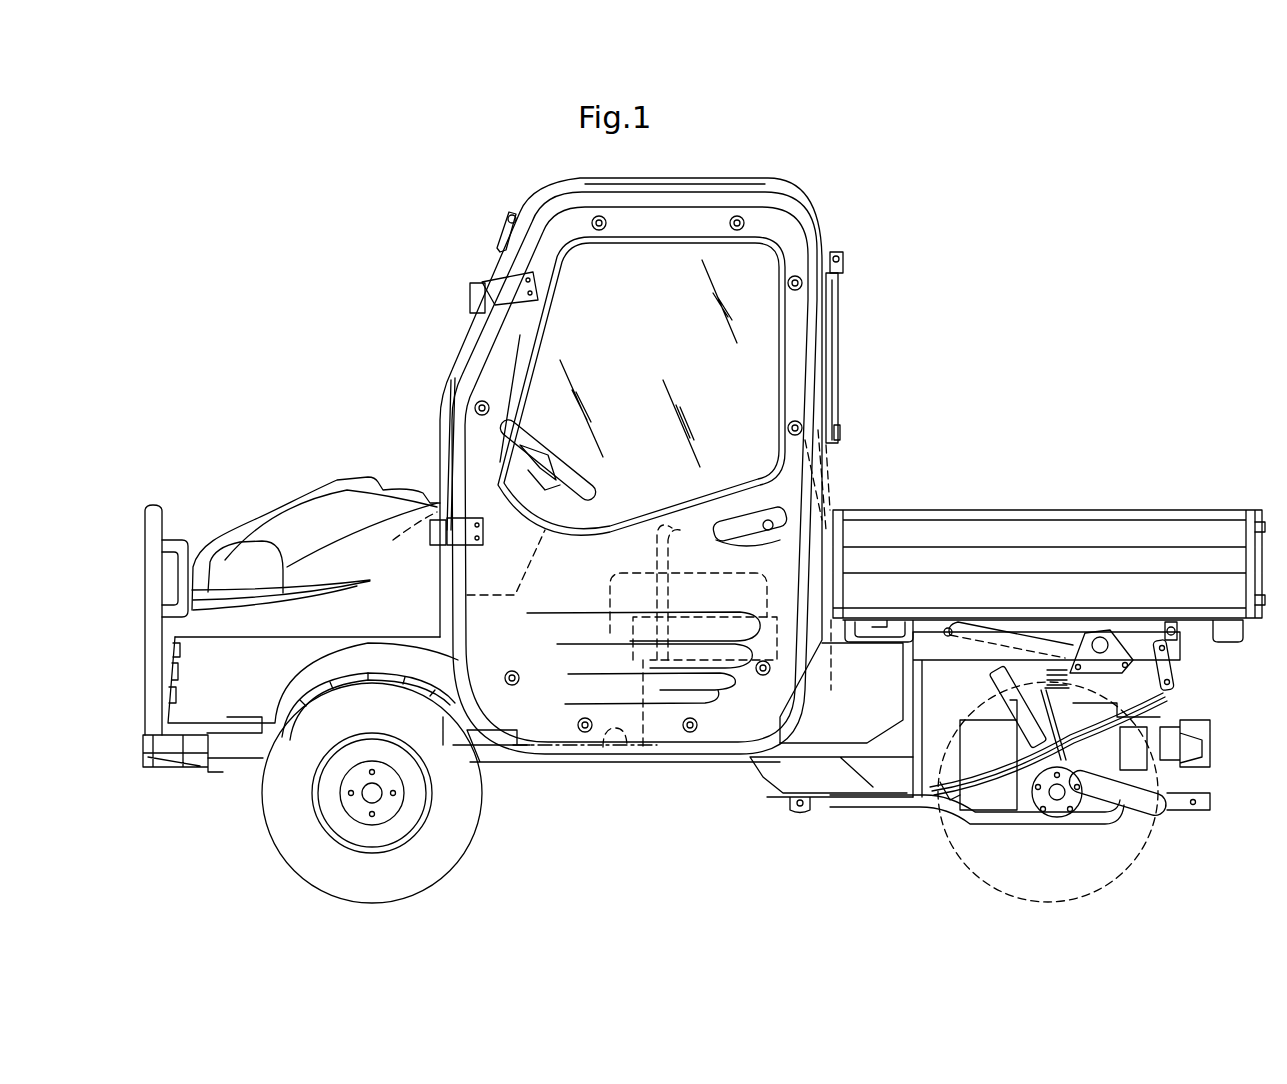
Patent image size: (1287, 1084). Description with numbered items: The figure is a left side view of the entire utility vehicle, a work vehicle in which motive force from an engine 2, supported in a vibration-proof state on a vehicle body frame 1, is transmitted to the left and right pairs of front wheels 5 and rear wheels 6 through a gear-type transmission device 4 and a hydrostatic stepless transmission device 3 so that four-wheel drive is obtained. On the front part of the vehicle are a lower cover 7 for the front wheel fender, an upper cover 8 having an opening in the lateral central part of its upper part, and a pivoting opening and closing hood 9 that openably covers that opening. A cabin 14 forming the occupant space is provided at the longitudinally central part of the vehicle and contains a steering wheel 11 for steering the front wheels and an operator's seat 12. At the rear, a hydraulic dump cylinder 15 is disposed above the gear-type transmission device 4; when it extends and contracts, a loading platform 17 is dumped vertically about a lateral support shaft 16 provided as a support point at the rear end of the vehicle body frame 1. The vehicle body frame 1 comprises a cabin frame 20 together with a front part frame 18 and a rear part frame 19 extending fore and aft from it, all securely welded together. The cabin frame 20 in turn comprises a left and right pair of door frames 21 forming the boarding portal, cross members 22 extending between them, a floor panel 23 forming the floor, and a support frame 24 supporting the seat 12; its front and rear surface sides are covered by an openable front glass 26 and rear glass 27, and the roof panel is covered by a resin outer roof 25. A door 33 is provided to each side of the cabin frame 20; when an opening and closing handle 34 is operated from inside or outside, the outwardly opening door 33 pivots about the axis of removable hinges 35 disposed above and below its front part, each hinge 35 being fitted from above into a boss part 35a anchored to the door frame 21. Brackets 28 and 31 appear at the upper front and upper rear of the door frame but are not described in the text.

The vehicle body frame 1 is at (723, 763).
The engine 2 is at (923, 677).
The hydrostatic stepless transmission device 3 is at (1202, 742).
The gear-type transmission device 4 is at (987, 800).
The front wheel 5 is at (270, 828).
The rear wheel 6 is at (1165, 790).
The lower cover 7 is at (227, 720).
The upper cover 8 is at (347, 520).
The opening and closing hood 9 is at (227, 532).
The steering wheel 11 is at (535, 443).
The operator's seat 12 is at (622, 580).
The cabin 14 is at (824, 200).
The hydraulic dump cylinder 15 is at (968, 622).
The lateral support shaft 16 is at (1173, 612).
The loading platform 17 is at (1030, 510).
The front part frame 18 is at (495, 762).
The rear part frame 19 is at (1180, 650).
The cabin frame 20 is at (824, 330).
The door frame 21 is at (797, 668).
The cross member 22 is at (830, 487).
The floor panel 23 is at (600, 752).
The support frame 24 is at (650, 693).
The resin outer roof 25 is at (663, 177).
The front glass 26 is at (437, 417).
The rear glass 27 is at (838, 395).
The upper bracket 28 is at (497, 232).
The rear upper bracket 31 is at (832, 273).
The door 33 is at (560, 237).
The opening and closing handle 34 is at (743, 523).
The hinge 35 is at (507, 292).
The boss part 35a is at (468, 303).